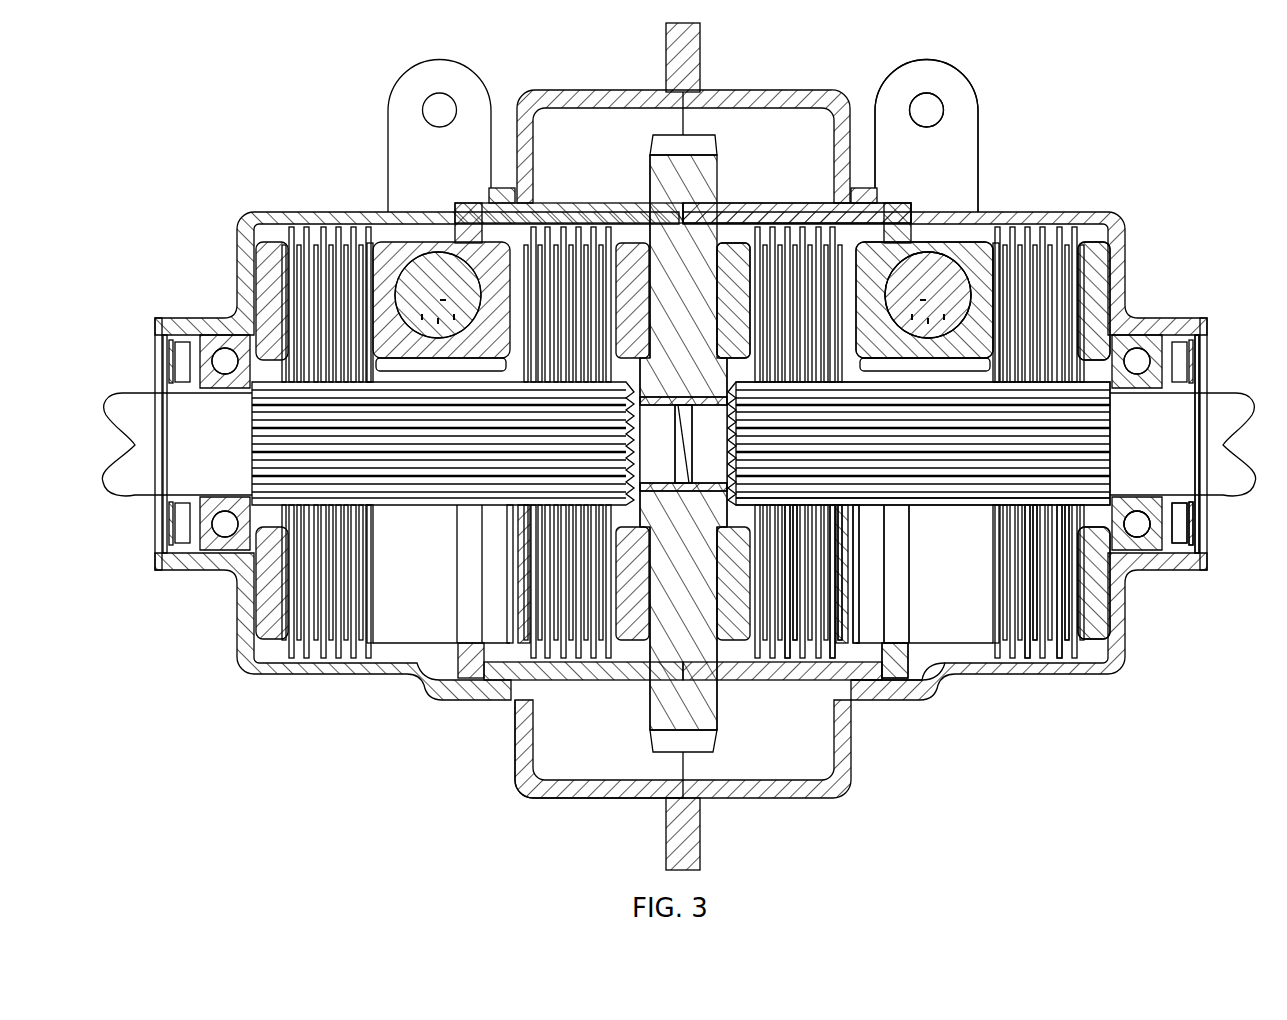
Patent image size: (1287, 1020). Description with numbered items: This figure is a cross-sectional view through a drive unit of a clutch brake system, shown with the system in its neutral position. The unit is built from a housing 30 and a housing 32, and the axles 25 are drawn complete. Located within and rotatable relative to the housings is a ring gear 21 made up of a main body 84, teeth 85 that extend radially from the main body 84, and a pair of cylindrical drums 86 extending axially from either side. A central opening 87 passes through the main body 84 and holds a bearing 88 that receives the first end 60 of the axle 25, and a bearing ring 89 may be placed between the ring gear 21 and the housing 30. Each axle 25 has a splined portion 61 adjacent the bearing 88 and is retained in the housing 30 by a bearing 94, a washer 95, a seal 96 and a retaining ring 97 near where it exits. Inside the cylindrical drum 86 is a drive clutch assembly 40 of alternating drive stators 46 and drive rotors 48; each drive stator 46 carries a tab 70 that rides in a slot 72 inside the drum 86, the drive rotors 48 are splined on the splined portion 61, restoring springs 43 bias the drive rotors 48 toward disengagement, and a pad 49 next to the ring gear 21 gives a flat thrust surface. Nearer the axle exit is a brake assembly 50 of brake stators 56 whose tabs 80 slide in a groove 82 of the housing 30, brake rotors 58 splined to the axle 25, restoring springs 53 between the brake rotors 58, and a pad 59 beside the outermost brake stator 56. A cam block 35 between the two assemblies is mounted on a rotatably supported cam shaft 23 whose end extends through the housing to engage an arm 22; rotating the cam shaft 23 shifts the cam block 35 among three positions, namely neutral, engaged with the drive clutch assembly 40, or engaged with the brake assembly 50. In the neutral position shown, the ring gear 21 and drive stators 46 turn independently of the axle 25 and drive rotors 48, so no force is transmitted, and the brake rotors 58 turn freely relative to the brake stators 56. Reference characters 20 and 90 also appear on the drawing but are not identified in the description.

The brake assembly 20 is at (1048, 128).
The ring gear 21 is at (740, 168).
The arm 22 is at (968, 154).
The cam shaft 23 is at (916, 268).
The axle 25 is at (1183, 457).
The housing 30 is at (808, 798).
The housing 32 is at (558, 798).
The cam block 35 is at (962, 245).
The drive clutch assembly 40 is at (772, 700).
The restoring springs 43 is at (865, 528).
The drive stators 46 is at (862, 690).
The drive rotors 48 is at (787, 625).
The pad 49 is at (733, 260).
The brake assembly 50 is at (1007, 700).
The restoring springs 53 is at (1005, 531).
The brake stators 56 is at (1095, 628).
The brake rotors 58 is at (1048, 656).
The pad 59 is at (1100, 250).
The first end 60 is at (722, 452).
The splined portion 61 is at (947, 492).
The tab 70 is at (836, 618).
The slot 72 is at (862, 228).
The tab 80 is at (1070, 650).
The groove 82 is at (968, 660).
The main body 84 is at (648, 192).
The teeth 85 is at (717, 150).
The cylindrical drums 86 is at (838, 180).
The central opening 87 is at (715, 660).
The bearing 88 is at (655, 685).
The bearing ring 89 is at (878, 630).
The piston 90 is at (845, 592).
The bearing 94 is at (1135, 572).
The washer 95 is at (1160, 560).
The seal 96 is at (1168, 562).
The retaining ring 97 is at (1195, 530).